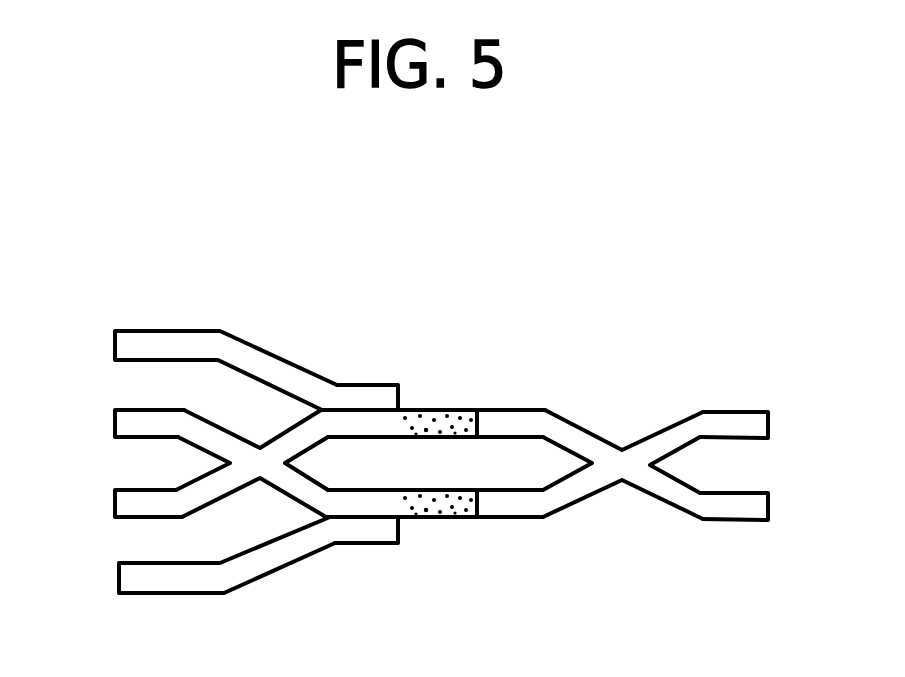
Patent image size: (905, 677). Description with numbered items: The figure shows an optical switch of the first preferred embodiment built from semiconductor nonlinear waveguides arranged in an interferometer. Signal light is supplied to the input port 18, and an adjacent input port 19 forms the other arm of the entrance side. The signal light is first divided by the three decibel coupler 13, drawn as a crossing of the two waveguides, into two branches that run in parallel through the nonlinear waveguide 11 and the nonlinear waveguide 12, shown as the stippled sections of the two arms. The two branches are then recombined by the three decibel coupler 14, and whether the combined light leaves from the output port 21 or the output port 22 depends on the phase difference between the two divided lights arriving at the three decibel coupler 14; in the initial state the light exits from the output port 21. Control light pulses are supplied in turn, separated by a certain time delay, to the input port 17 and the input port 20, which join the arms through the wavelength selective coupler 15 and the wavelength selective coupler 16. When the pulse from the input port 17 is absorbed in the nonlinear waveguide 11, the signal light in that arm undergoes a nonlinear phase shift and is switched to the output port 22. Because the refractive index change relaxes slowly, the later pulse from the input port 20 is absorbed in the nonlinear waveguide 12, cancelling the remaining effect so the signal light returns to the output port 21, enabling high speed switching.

The nonlinear waveguide 11 is at (440, 410).
The nonlinear waveguide 12 is at (440, 519).
The 3 dB coupler 13 is at (268, 417).
The 3 dB coupler 14 is at (623, 437).
The wavelength selective coupler 15 is at (339, 378).
The wavelength selective coupler 16 is at (336, 545).
The input port 17 is at (110, 348).
The input port 18 is at (112, 426).
The input port 19 is at (112, 508).
The input port 20 is at (115, 582).
The output port 21 is at (773, 428).
The output port 22 is at (773, 507).